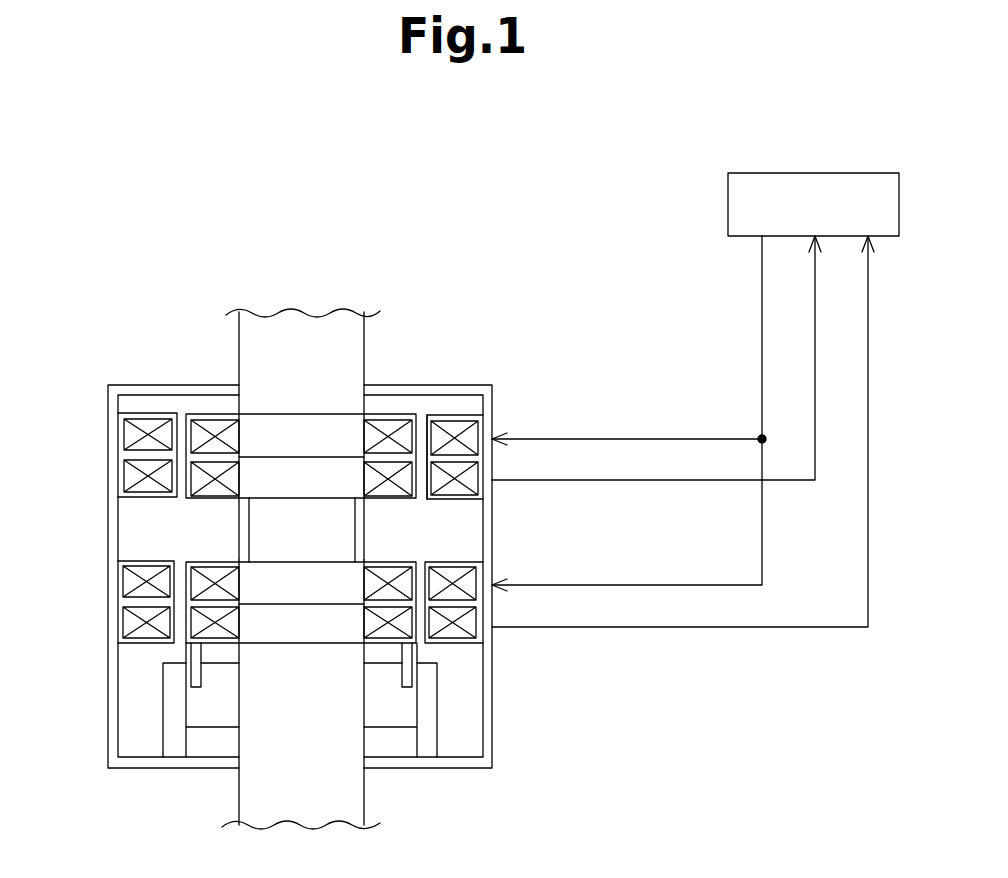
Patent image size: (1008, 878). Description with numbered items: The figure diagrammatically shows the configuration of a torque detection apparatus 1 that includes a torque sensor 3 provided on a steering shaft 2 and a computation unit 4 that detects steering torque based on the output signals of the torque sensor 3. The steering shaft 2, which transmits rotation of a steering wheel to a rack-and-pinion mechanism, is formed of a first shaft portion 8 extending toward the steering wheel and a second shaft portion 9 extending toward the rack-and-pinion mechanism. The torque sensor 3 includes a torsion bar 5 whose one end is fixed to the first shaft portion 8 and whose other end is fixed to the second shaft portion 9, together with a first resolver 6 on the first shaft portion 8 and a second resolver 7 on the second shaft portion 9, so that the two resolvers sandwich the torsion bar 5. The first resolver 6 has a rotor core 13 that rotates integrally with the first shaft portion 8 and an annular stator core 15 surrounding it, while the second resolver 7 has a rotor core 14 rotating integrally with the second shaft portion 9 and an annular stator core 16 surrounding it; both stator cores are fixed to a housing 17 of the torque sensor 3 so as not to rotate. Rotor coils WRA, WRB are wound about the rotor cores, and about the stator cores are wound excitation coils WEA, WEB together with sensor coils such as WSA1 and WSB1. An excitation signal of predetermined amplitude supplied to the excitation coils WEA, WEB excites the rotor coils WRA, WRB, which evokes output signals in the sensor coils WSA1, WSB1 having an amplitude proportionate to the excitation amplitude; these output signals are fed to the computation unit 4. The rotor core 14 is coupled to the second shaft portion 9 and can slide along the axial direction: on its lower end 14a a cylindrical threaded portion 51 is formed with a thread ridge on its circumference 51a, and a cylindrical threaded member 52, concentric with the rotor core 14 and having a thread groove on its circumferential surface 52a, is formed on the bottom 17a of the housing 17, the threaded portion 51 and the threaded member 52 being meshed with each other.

The torque detection apparatus 1 is at (297, 152).
The steering shaft 2 is at (342, 563).
The first shaft portion 8 is at (366, 335).
The second shaft portion 9 is at (364, 800).
The torque sensor 3 is at (462, 387).
The computation unit 4 is at (856, 173).
The torsion bar 5 is at (355, 510).
The first resolver 6 is at (350, 428).
The second resolver 7 is at (352, 575).
The rotor core 13 is at (309, 418).
The rotor core 14 is at (313, 577).
The lower end 14a is at (295, 645).
The stator core 15 is at (350, 441).
The stator core 16 is at (352, 600).
The housing 17 is at (492, 740).
The bottom 17a is at (118, 752).
The threaded portion 51 is at (415, 655).
The circumference 51a is at (186, 652).
The threaded member 52 is at (162, 675).
The circumferential surface 52a is at (408, 708).
The rotor coil WRA is at (402, 475).
The rotor coil WRB is at (407, 627).
The excitation coil WEA is at (458, 428).
The excitation coil WEB is at (457, 572).
The sensor coil WSA1 is at (472, 483).
The sensor coil WSB1 is at (468, 628).